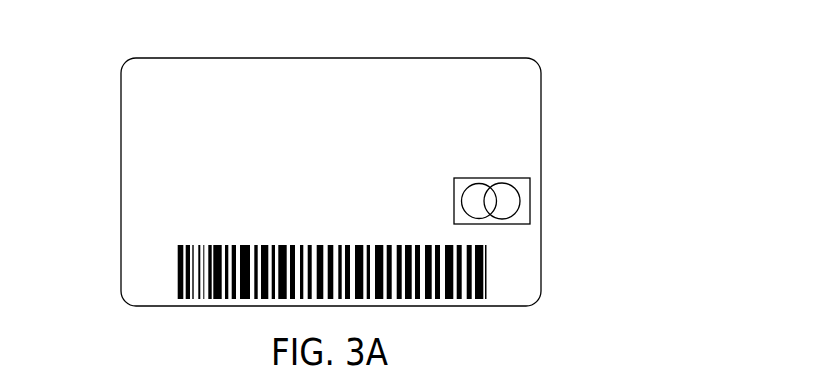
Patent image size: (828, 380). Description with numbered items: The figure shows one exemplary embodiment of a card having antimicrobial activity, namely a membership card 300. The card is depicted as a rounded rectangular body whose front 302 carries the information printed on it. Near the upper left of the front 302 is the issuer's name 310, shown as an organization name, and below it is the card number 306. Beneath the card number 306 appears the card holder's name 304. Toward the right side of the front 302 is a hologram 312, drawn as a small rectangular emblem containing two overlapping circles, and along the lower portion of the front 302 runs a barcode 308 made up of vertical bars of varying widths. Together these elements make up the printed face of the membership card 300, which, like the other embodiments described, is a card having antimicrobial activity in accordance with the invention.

The membership card 300 is at (667, 88).
The front 302 is at (541, 116).
The card holder's name 304 is at (147, 191).
The card number 306 is at (147, 145).
The barcode 308 is at (486, 271).
The issuer's name 310 is at (147, 93).
The hologram 312 is at (530, 201).